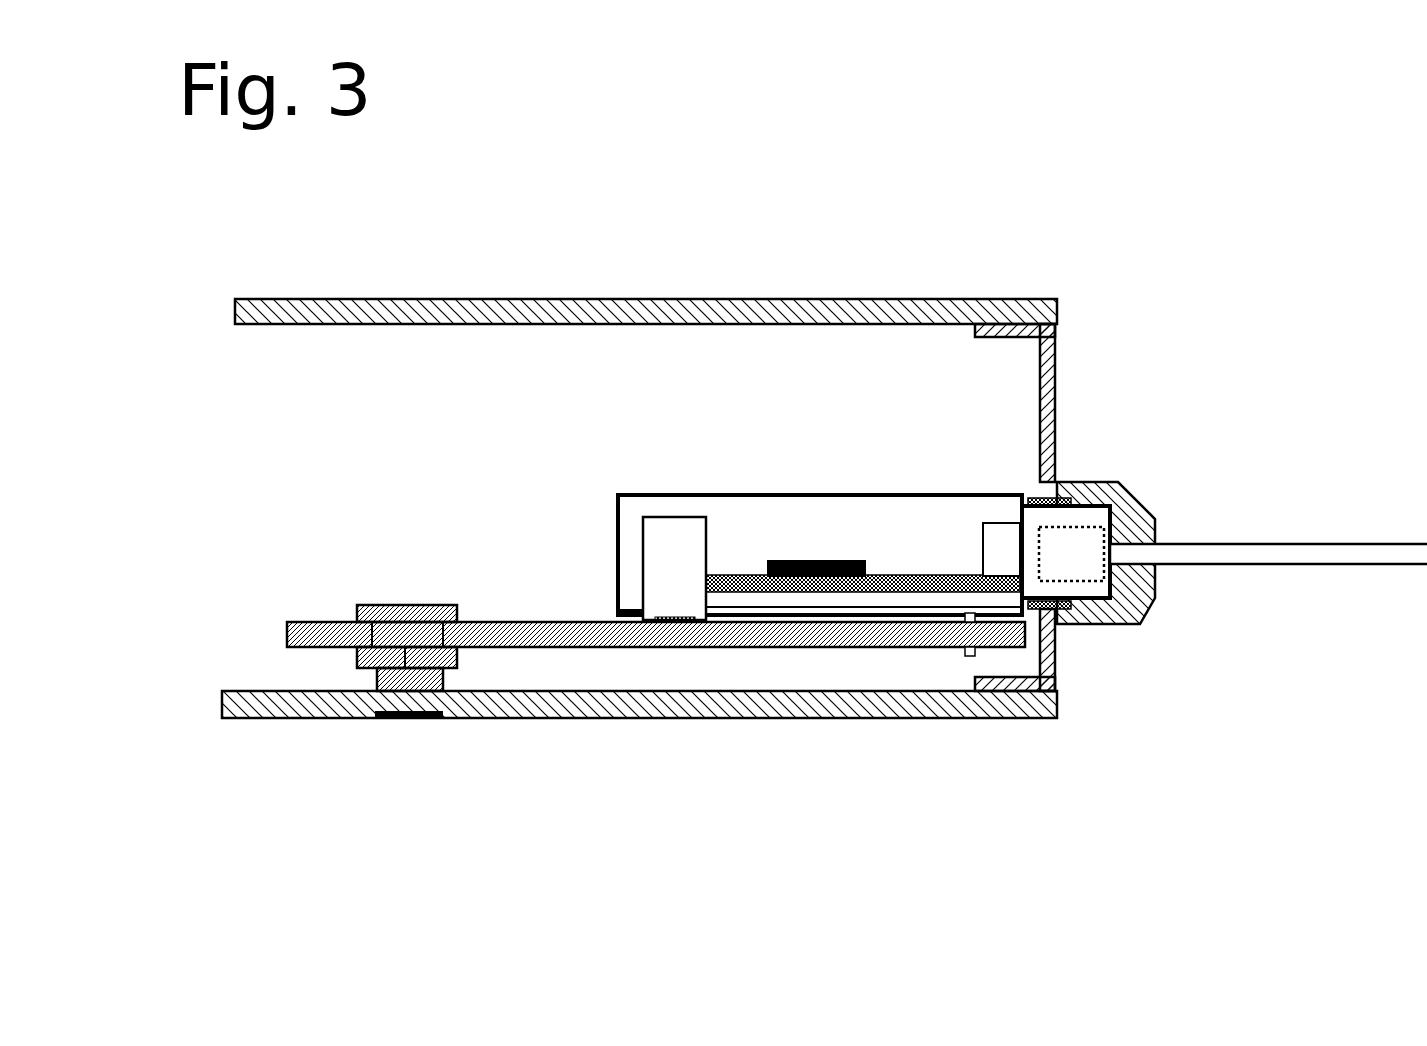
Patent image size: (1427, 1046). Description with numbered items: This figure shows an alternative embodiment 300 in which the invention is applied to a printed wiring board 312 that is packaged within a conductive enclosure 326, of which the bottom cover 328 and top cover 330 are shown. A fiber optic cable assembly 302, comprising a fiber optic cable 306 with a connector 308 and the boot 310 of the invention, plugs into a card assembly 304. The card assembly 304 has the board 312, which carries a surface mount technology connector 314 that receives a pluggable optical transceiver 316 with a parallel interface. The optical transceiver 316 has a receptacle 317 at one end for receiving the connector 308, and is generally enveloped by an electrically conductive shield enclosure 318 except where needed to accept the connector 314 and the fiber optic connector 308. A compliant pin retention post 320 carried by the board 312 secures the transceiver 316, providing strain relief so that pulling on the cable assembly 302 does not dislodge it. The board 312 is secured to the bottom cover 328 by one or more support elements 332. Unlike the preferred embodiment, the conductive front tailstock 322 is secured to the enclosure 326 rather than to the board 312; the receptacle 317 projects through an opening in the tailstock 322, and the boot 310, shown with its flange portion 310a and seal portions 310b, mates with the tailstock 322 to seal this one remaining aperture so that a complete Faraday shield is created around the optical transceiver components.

The alternative embodiment 300 is at (800, 150).
The fiber optic cable assembly 302 is at (1209, 278).
The card assembly 304 is at (548, 770).
The fiber optic cable 306 is at (1383, 551).
The connector 308 is at (1090, 581).
The boot 310 is at (1151, 585).
The connector flange 310a is at (1095, 483).
The connector seal 310b is at (1042, 492).
The printed wiring board 312 is at (487, 622).
The surface mount technology connector 314 is at (677, 532).
The pluggable optical transceiver 316 is at (831, 450).
The receptacle 317 is at (1082, 590).
The electrically conductive shield enclosure 318 is at (618, 495).
The compliant pin retention post 320 is at (970, 656).
The front tailstock 322 is at (1056, 358).
The conductive enclosure 326 is at (225, 370).
The bottom cover 328 is at (702, 708).
The top cover 330 is at (526, 306).
The support element 332 is at (363, 660).